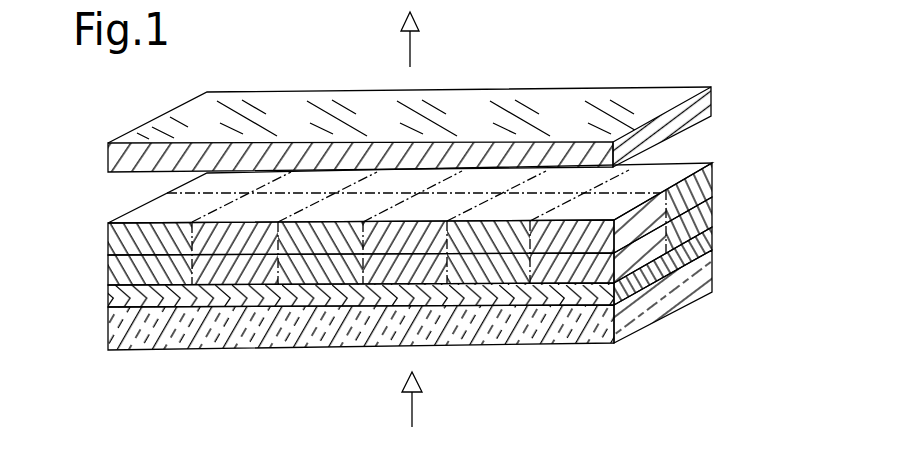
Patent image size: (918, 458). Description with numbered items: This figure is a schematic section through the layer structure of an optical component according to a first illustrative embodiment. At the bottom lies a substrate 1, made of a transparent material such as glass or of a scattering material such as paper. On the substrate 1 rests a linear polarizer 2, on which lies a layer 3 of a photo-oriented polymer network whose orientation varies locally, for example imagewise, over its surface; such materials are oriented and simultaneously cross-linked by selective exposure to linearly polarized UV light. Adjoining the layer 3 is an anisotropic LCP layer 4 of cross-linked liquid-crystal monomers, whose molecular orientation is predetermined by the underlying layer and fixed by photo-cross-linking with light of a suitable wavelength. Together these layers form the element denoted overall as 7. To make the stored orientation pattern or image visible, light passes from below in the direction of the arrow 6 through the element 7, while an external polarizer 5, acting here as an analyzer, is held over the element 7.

The substrate 1 is at (590, 347).
The linear polarizer 2 is at (704, 239).
The layer of photo-oriented polymer network (PPN) 3 is at (706, 214).
The anisotropic LCP layer 4 is at (710, 186).
The external polarizer 5 is at (710, 106).
The arrow 6 is at (410, 53).
The element 7 is at (473, 265).